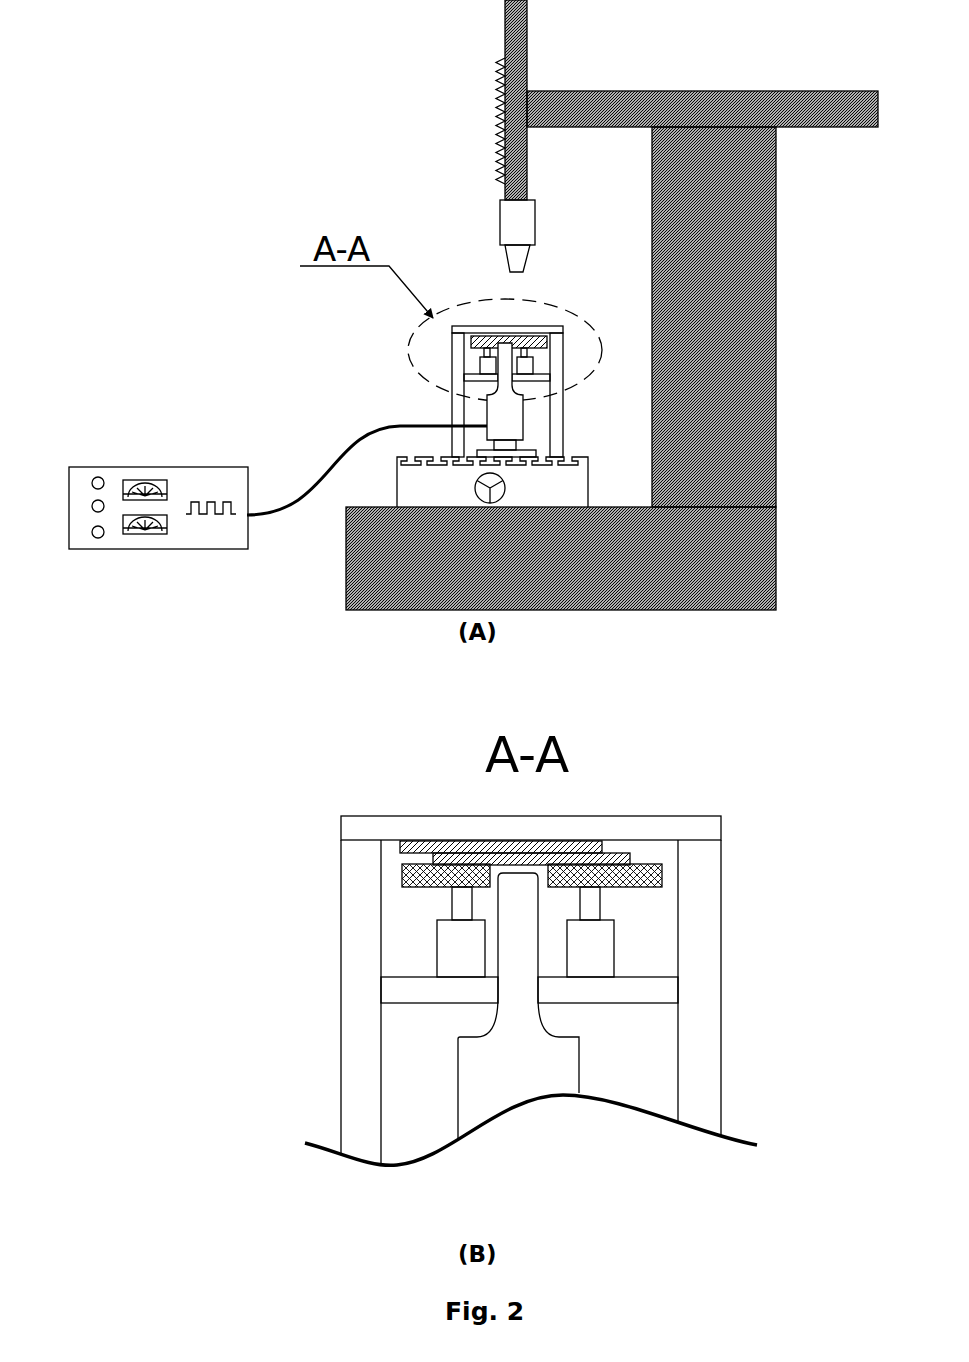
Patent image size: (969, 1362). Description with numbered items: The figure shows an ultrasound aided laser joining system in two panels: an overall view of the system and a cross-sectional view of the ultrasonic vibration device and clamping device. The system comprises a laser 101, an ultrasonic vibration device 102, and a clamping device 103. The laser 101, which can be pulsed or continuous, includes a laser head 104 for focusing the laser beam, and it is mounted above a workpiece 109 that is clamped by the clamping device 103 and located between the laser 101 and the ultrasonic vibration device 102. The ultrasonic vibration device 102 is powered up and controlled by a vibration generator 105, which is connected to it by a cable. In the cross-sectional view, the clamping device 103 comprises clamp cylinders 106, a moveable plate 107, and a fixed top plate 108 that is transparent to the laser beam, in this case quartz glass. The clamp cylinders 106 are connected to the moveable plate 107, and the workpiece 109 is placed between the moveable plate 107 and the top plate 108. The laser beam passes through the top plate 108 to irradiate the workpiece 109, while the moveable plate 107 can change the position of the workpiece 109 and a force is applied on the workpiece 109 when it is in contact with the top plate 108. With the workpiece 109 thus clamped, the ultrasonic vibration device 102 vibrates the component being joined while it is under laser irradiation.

The laser 101 is at (500, 152).
The ultrasonic vibration device 102 is at (495, 415).
The clamping device 103 is at (490, 353).
The laser head 104 is at (507, 225).
The vibration generator 105 is at (108, 476).
The clamp cylinders 106 is at (463, 932).
The moveable plate 107 is at (425, 880).
The fixed top plate 108 is at (387, 830).
The workpiece 109 is at (508, 338).